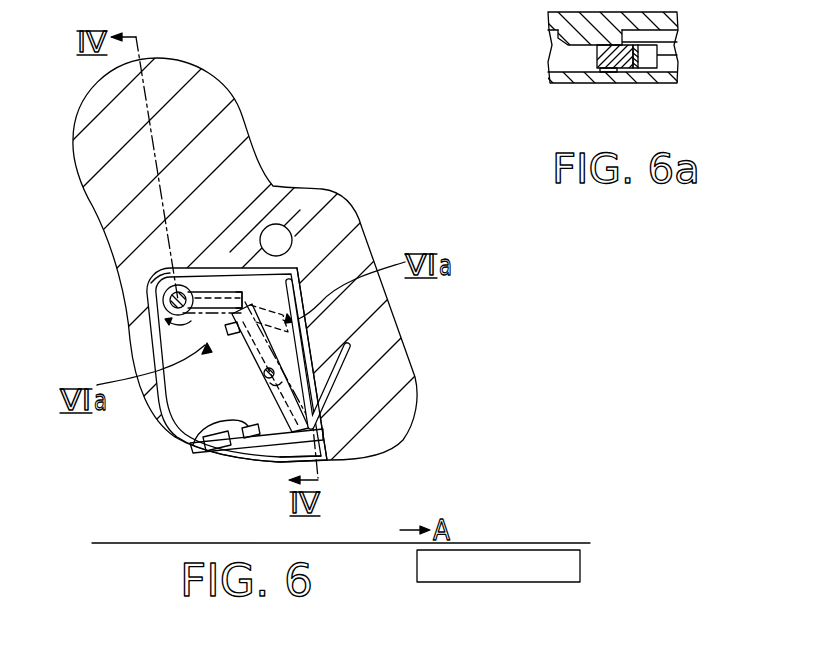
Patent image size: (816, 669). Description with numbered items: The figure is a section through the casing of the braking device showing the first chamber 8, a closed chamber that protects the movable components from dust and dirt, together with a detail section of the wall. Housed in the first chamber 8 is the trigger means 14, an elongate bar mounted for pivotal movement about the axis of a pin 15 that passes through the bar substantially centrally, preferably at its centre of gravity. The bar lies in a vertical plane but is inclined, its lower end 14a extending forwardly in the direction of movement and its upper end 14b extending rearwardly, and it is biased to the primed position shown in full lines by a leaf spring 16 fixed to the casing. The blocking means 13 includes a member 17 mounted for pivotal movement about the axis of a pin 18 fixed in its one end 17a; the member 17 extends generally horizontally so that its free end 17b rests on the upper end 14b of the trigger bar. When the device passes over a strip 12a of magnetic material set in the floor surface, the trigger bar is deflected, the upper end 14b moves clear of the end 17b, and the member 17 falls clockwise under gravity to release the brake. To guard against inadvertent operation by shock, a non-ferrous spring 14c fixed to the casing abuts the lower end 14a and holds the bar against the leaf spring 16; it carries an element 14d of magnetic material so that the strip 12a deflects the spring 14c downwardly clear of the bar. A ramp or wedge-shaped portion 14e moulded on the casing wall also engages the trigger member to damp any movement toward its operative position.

In FIG. 6, the first chamber 8 is at (183, 387).
In FIG. 6, the strip of magnetic material 12a is at (485, 575).
In FIG. 6, the blocking means 13 is at (160, 288).
In FIG. 6, the trigger means 14 is at (258, 342).
In FIG. 6A, the trigger means 14 is at (609, 62).
In FIG. 6, the lower end of trigger member 14a is at (285, 462).
In FIG. 6, the upper end of trigger member 14b is at (298, 272).
In FIG. 6, the non-ferrous spring 14c is at (245, 442).
In FIG. 6, the element of magnetic material 14d is at (203, 447).
In FIG. 6A, the ramp or wedge-shaped portion 14e is at (588, 40).
In FIG. 6, the pin 15 is at (262, 375).
In FIG. 6, the leaf spring 16 is at (340, 380).
In FIG. 6A, the leaf spring 16 is at (657, 56).
In FIG. 6, the blocking member 17 is at (206, 290).
In FIG. 6, the one end of blocking member 17a is at (163, 298).
In FIG. 6, the free end of blocking member 17b is at (240, 290).
In FIG. 6, the pin 18 is at (160, 320).